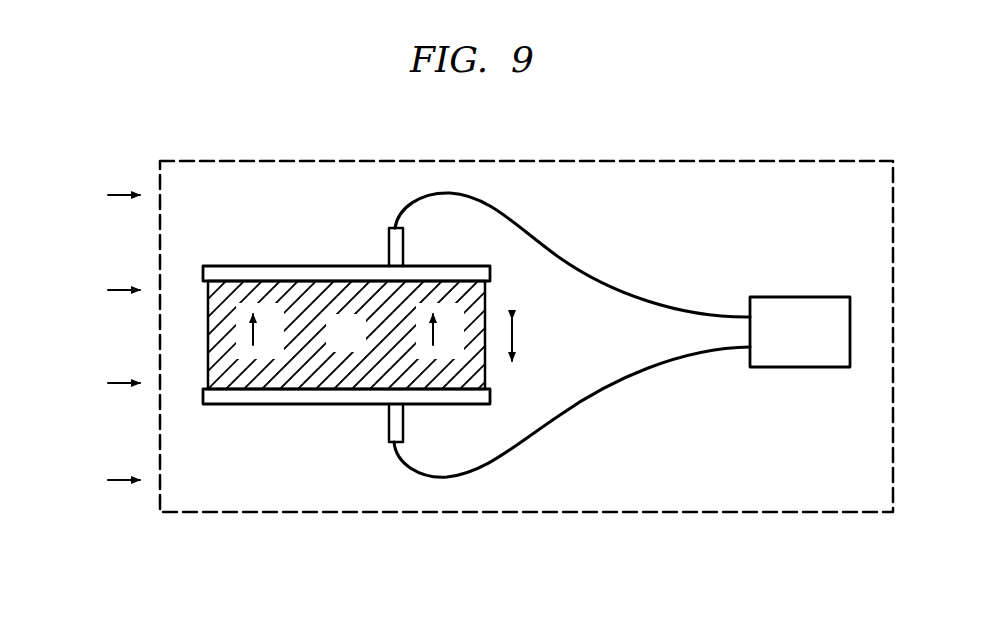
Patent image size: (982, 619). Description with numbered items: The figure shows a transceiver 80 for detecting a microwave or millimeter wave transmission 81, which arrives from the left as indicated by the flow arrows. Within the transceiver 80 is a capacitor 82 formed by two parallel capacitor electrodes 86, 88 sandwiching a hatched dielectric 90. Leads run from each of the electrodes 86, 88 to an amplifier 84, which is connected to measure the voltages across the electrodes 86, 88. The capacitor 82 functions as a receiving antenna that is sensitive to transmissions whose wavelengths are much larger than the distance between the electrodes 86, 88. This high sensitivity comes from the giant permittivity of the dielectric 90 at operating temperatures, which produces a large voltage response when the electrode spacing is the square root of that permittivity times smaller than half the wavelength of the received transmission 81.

The transceiver 80 is at (597, 511).
The microwave or millimeter wave transmission 81 is at (55, 345).
The capacitor 82 is at (259, 262).
The amplifier 84 is at (787, 346).
The capacitor electrode 86 is at (319, 404).
The capacitor electrode 88 is at (455, 264).
The dielectric 90 is at (358, 348).